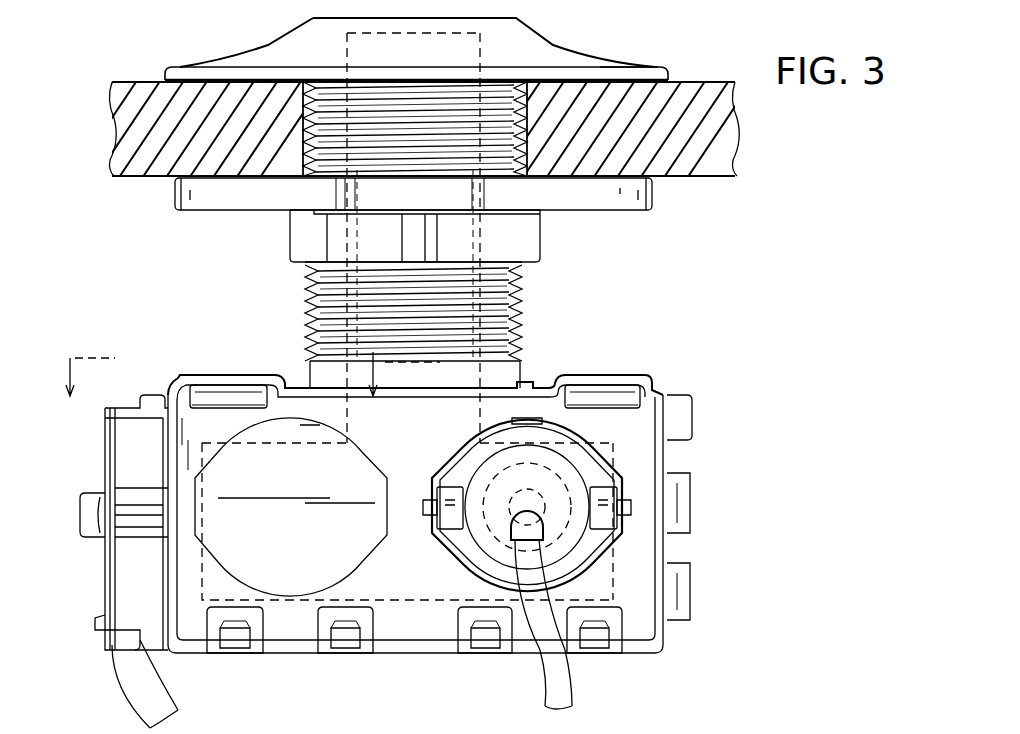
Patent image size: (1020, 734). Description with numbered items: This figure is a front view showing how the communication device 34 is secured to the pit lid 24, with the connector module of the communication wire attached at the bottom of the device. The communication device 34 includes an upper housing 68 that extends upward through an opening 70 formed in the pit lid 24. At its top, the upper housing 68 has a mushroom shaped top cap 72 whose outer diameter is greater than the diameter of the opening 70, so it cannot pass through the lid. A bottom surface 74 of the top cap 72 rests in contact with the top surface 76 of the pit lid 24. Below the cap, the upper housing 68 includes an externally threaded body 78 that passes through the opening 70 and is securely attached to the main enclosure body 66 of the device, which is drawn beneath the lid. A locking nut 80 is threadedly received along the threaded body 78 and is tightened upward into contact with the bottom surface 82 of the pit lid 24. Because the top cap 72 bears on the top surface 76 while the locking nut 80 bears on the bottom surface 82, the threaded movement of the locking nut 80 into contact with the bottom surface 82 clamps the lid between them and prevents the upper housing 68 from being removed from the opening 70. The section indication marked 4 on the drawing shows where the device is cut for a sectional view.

The section line 4- 4 is at (273, 238).
The pit lid 24 is at (132, 123).
The communication device 34 is at (705, 334).
The main enclosure body 66 is at (667, 458).
The upper housing 68 is at (530, 299).
The opening 70 is at (300, 118).
The top cap 72 is at (552, 43).
The bottom surface 74 is at (630, 66).
The top surface 76 is at (128, 83).
The externally threaded body 78 is at (308, 320).
The locking nut 80 is at (542, 235).
The bottom surface 82 is at (692, 180).